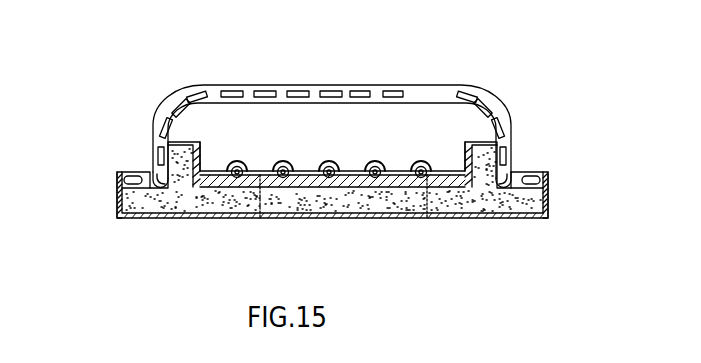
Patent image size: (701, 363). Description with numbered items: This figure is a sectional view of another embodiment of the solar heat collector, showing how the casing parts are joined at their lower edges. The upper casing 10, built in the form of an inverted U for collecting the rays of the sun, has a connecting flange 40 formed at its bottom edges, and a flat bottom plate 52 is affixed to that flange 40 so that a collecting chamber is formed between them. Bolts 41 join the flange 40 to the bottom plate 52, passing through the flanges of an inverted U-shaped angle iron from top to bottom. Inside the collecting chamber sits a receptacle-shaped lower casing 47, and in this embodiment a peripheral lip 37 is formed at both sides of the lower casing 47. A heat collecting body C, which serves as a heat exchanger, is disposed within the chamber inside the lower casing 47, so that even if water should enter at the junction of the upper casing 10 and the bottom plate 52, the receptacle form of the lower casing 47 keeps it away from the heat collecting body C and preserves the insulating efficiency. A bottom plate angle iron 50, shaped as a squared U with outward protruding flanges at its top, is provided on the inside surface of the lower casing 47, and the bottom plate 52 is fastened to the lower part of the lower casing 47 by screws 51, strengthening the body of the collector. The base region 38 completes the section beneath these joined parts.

The cover 10 is at (322, 85).
The heat collecting body C is at (350, 170).
The peripheral lip 37 is at (140, 204).
The base 38 is at (549, 196).
The connecting flange 40 is at (140, 172).
The bolts 41 is at (535, 172).
The lower casing 47 is at (220, 206).
The bottom plate angle iron 50 is at (312, 190).
The screws 51 is at (426, 216).
The bottom plate 52 is at (351, 214).